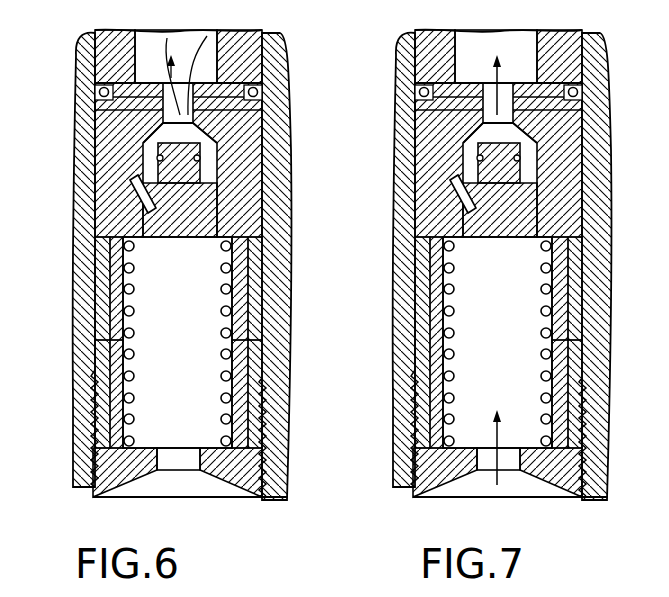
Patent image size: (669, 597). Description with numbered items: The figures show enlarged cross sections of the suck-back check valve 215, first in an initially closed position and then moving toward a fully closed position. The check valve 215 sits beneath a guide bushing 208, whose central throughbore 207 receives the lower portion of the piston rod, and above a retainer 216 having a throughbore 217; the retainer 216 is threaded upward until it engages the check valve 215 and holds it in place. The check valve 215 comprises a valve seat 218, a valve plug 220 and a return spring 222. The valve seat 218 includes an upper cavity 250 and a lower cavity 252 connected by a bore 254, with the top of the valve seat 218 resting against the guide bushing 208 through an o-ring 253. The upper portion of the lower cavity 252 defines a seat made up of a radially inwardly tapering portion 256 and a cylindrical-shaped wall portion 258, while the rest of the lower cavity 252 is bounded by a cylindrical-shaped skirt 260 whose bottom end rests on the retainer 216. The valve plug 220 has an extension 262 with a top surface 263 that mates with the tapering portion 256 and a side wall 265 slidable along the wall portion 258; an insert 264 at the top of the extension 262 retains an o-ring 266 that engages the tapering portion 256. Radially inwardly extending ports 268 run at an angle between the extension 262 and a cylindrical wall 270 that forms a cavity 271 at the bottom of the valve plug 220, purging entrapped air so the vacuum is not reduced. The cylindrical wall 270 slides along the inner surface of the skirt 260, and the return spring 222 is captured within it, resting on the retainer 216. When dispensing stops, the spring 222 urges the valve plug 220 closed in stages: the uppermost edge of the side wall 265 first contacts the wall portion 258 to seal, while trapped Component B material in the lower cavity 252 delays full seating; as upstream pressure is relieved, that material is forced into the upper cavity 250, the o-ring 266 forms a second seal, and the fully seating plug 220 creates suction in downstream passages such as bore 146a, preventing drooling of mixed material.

In FIG. 6, the bore 146a is at (24, 0).
In FIG. 6, the central throughbore 207 is at (192, 47).
In FIG. 7, the central throughbore 207 is at (479, 53).
In FIG. 6, the guide bushing 208 is at (245, 57).
In FIG. 7, the guide bushing 208 is at (553, 48).
In FIG. 6, the suck-back check valve 215 is at (305, 97).
In FIG. 7, the suck-back check valve 215 is at (622, 66).
In FIG. 6, the retainer 216 is at (277, 484).
In FIG. 7, the retainer 216 is at (598, 478).
In FIG. 6, the throughbore 217 is at (188, 462).
In FIG. 7, the throughbore 217 is at (507, 463).
In FIG. 6, the valve seat 218 is at (222, 130).
In FIG. 7, the valve seat 218 is at (537, 127).
In FIG. 6, the valve plug 220 is at (238, 229).
In FIG. 7, the valve plug 220 is at (560, 228).
In FIG. 6, the return spring 222 is at (226, 354).
In FIG. 7, the return spring 222 is at (447, 367).
In FIG. 6, the upper cavity 250 is at (107, 88).
In FIG. 7, the upper cavity 250 is at (423, 90).
In FIG. 6, the lower cavity 252 is at (150, 120).
In FIG. 7, the lower cavity 252 is at (449, 160).
In FIG. 6, the o-ring 253 is at (255, 90).
In FIG. 7, the o-ring 253 is at (577, 92).
In FIG. 6, the bore 254 is at (180, 100).
In FIG. 7, the bore 254 is at (470, 140).
In FIG. 6, the radially inwardly tapering portion 256 is at (267, 167).
In FIG. 7, the radially inwardly tapering portion 256 is at (570, 165).
In FIG. 6, the cylindrical-shaped wall portion 258 is at (140, 150).
In FIG. 7, the cylindrical-shaped wall portion 258 is at (435, 185).
In FIG. 6, the cylindrical-shaped skirt 260 is at (126, 370).
In FIG. 7, the cylindrical-shaped skirt 260 is at (437, 387).
In FIG. 6, the extension 262 is at (105, 245).
In FIG. 7, the extension 262 is at (560, 200).
In FIG. 6, the top surface 263 is at (247, 202).
In FIG. 7, the insert 264 is at (497, 238).
In FIG. 6, the side wall 265 is at (135, 190).
In FIG. 7, the side wall 265 is at (440, 258).
In FIG. 6, the o-ring 266 is at (178, 245).
In FIG. 6, the ports 268 is at (110, 283).
In FIG. 7, the ports 268 is at (430, 290).
In FIG. 6, the cylindrical wall 270 is at (127, 323).
In FIG. 7, the cylindrical wall 270 is at (447, 327).
In FIG. 6, the cavity 271 is at (232, 366).
In FIG. 7, the cavity 271 is at (548, 316).